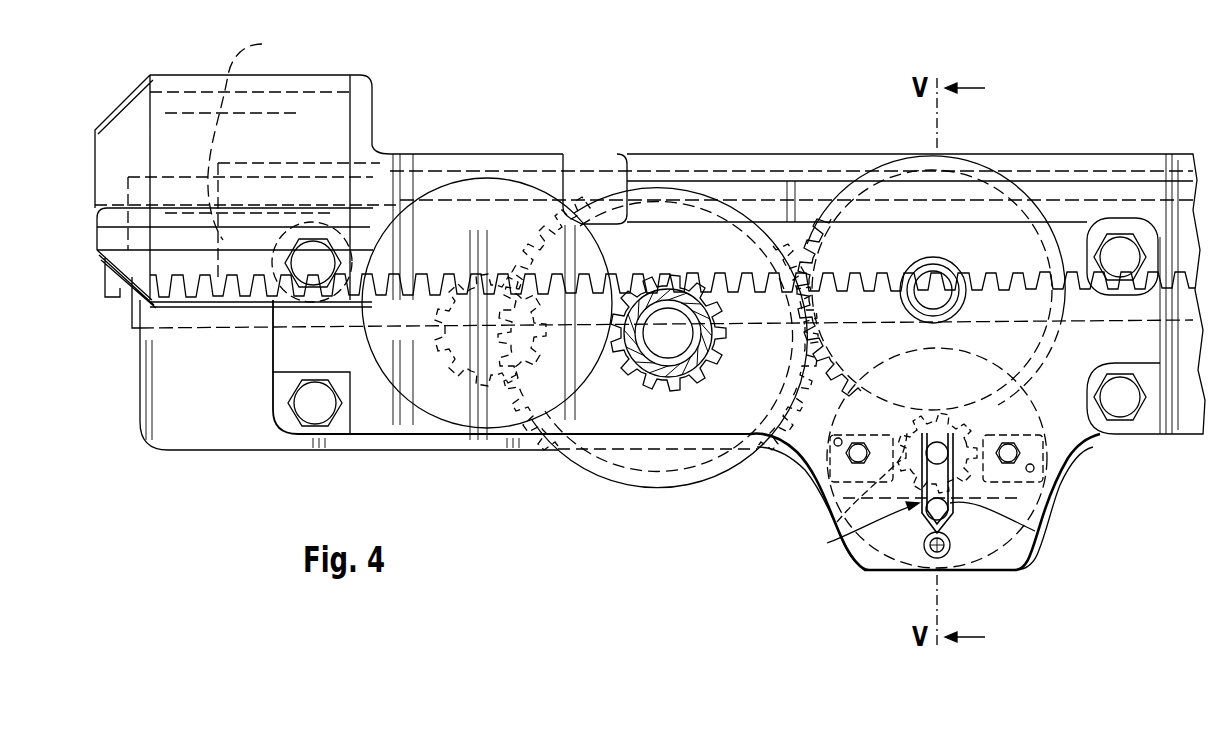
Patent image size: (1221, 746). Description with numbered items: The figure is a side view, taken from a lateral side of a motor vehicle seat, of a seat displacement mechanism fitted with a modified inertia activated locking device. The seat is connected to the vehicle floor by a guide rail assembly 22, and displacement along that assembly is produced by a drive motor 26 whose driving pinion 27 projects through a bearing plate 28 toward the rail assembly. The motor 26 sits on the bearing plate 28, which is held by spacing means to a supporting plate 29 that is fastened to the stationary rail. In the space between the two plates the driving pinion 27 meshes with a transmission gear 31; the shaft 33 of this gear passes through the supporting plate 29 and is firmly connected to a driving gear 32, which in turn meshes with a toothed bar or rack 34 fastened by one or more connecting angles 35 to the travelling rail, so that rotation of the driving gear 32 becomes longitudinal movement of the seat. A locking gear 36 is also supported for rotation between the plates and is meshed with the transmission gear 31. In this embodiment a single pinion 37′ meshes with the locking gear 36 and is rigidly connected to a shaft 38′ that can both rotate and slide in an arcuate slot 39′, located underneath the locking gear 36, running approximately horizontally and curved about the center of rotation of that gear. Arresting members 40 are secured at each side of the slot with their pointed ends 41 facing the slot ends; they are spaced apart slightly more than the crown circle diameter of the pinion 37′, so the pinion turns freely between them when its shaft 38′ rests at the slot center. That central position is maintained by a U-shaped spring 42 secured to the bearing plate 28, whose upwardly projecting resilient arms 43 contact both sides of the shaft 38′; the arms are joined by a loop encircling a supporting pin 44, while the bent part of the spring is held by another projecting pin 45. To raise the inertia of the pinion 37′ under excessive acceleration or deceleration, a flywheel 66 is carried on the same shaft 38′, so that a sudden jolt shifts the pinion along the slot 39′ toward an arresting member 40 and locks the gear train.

The guide rail assembly 22 is at (218, 318).
The drive motor 26 is at (362, 118).
The driving pinion 27 is at (462, 333).
The bearing plate 28 is at (397, 425).
The supporting plate 29 is at (242, 434).
The transmission gear 31 is at (698, 195).
The driving gear 32 is at (650, 386).
The shaft 33 is at (700, 347).
The toothed bar or rack 34 is at (107, 277).
The connecting angle 35 is at (247, 134).
The locking gear 36 is at (950, 162).
The pinion 37′ is at (837, 522).
The shaft 38′ is at (927, 432).
The arcuate slot 39′ is at (1033, 497).
The arresting member 40 is at (1052, 462).
The pointed end 41 is at (987, 423).
The U-shaped spring 42 is at (827, 543).
The resilient arm 43 is at (1035, 531).
The supporting pin 44 is at (928, 548).
The projecting pin 45 is at (952, 522).
The flywheel 66 is at (1020, 565).